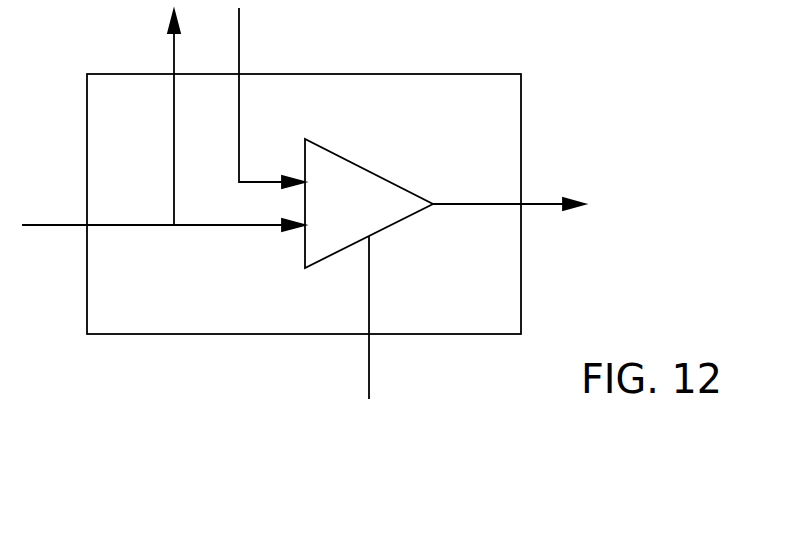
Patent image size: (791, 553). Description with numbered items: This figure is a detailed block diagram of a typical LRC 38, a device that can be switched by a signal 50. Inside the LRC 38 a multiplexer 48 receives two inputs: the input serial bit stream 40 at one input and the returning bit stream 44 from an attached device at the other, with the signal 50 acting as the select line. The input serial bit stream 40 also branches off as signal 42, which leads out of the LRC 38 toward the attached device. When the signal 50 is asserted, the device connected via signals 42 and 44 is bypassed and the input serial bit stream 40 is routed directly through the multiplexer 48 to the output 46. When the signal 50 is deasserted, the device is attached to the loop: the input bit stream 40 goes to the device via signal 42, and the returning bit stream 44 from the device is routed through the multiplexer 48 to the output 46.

The LRC 38 is at (435, 74).
The input serial bit stream 40 is at (65, 229).
The signal 42 is at (174, 40).
The returning bit stream 44 is at (239, 42).
The output 46 is at (543, 207).
The multiplexer 48 is at (392, 180).
The signal 50 is at (369, 357).